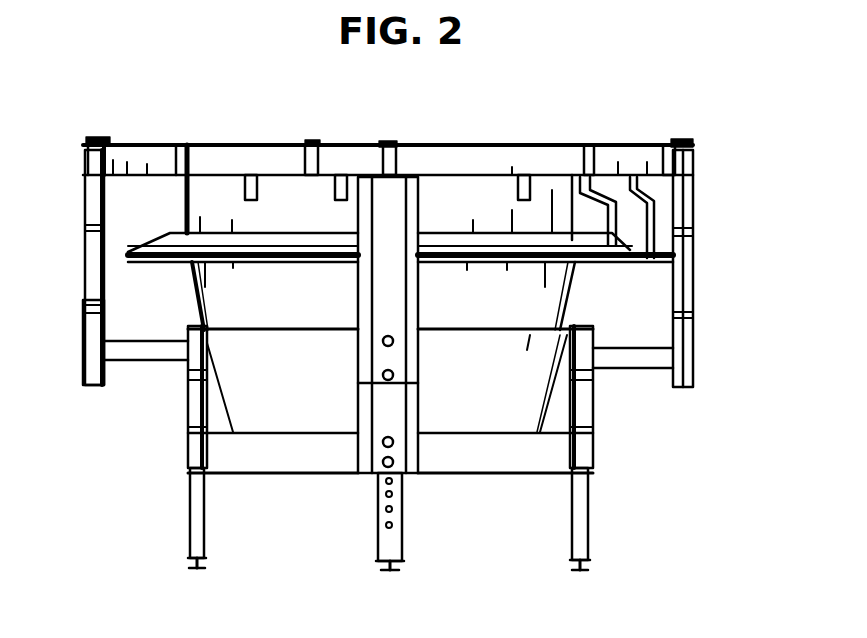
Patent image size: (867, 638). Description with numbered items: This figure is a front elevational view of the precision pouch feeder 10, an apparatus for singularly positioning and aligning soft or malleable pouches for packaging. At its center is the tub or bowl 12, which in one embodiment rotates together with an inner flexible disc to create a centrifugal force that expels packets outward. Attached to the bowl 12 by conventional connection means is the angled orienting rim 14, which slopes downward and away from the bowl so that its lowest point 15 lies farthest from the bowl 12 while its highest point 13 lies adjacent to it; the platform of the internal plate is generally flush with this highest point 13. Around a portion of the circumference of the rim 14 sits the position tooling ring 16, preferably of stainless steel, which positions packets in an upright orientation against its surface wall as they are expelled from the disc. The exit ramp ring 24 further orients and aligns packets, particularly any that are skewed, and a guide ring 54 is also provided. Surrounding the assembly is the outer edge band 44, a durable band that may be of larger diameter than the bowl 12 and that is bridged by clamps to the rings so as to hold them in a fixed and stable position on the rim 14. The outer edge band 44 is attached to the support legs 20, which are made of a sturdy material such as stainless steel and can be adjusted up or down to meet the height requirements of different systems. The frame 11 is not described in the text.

The precision pouch feeder 10 is at (387, 301).
The frame 11 is at (378, 386).
The tub or bowl 12 is at (388, 347).
The highest point of angled rim 13 is at (221, 234).
The angled orienting rim 14 is at (423, 325).
The lowest point of rim 15 is at (130, 251).
The position tooling ring 16 is at (172, 189).
The support legs 20 is at (416, 519).
The exit ramp ring 24 is at (630, 197).
The outer edge band 44 is at (388, 153).
The guide ring 54 is at (595, 203).